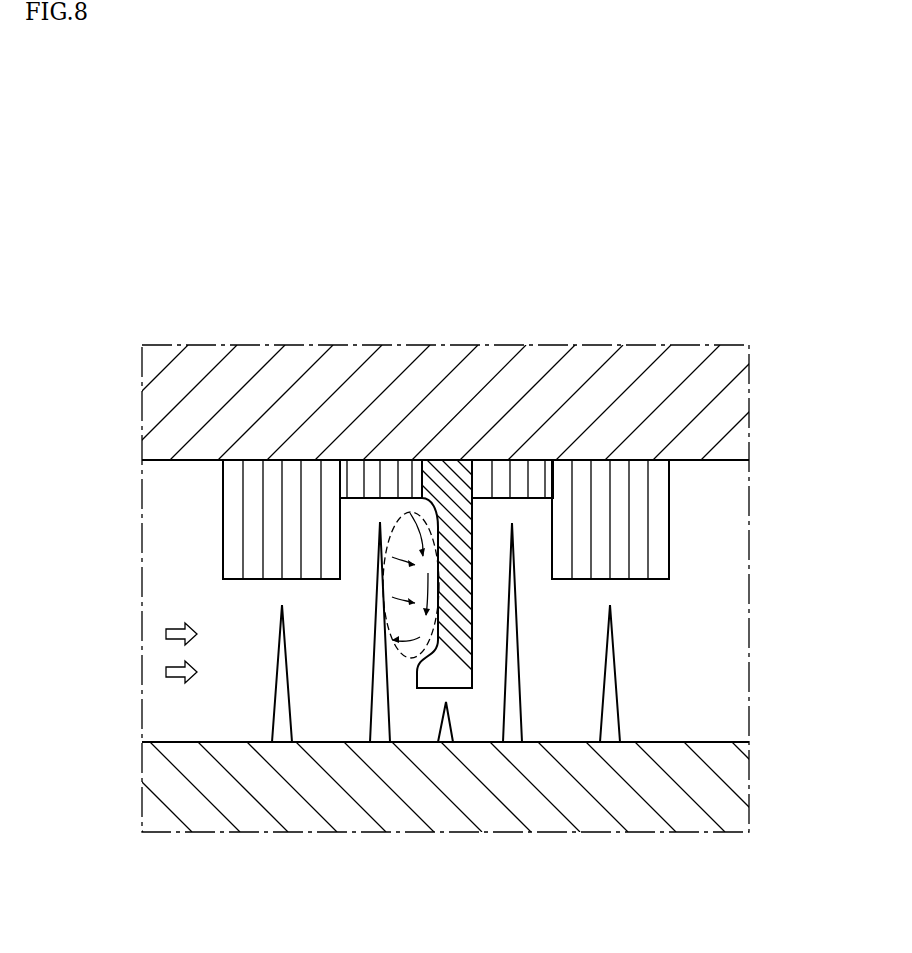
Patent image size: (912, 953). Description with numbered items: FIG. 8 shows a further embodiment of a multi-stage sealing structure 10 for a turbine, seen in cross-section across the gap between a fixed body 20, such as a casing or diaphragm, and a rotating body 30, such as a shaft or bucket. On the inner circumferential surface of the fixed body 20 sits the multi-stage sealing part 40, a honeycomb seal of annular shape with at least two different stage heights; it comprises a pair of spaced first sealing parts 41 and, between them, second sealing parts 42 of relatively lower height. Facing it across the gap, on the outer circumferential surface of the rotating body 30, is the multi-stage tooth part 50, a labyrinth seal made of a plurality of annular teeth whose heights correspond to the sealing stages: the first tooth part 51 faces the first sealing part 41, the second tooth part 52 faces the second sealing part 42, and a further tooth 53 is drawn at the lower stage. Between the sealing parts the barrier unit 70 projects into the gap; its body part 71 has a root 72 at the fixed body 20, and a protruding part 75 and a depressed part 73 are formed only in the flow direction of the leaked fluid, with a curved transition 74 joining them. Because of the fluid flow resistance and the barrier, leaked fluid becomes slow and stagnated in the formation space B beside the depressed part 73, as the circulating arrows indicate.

The heat dissipation structure 10 is at (160, 233).
The fixed body 20 is at (725, 415).
The rotating body 30 is at (702, 788).
The multi-stage sealing part 40 is at (428, 419).
The first sealing part 41 is at (290, 475).
The second sealing part 42 is at (376, 488).
The multi-stage tooth part 50 is at (421, 728).
The first tooth part 51 is at (282, 720).
The second tooth part 52 is at (380, 707).
The third fin 53 is at (446, 730).
The barrier unit 70 is at (534, 559).
The body part 71 is at (447, 483).
The upper connection portion 72 is at (412, 478).
The depressed part 73 is at (462, 547).
The curved portion 74 is at (423, 650).
The protruding part 75 is at (450, 688).
The formation space B is at (378, 588).